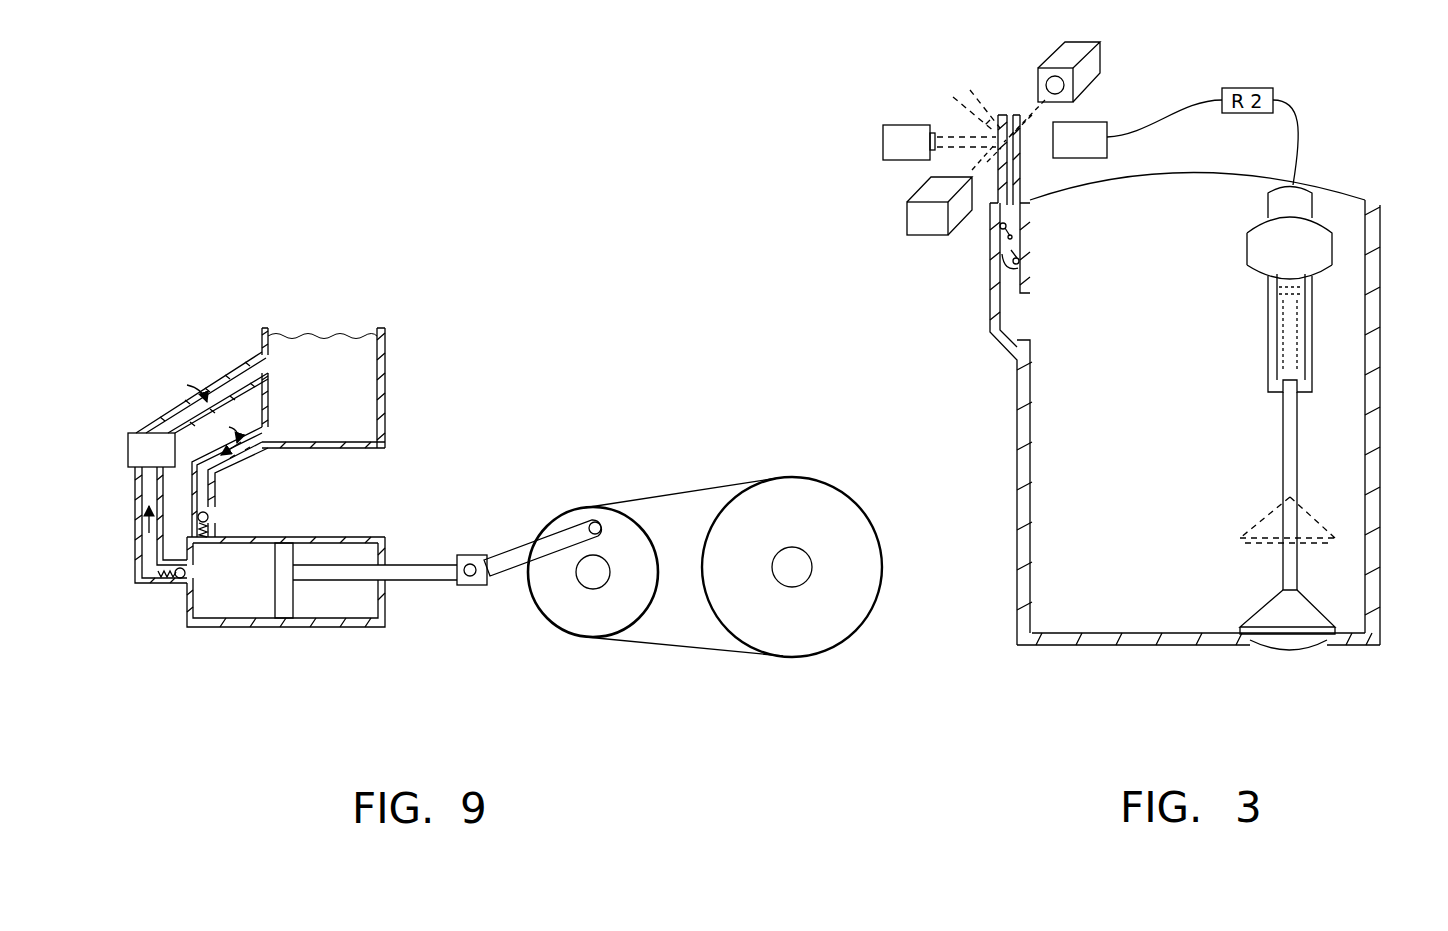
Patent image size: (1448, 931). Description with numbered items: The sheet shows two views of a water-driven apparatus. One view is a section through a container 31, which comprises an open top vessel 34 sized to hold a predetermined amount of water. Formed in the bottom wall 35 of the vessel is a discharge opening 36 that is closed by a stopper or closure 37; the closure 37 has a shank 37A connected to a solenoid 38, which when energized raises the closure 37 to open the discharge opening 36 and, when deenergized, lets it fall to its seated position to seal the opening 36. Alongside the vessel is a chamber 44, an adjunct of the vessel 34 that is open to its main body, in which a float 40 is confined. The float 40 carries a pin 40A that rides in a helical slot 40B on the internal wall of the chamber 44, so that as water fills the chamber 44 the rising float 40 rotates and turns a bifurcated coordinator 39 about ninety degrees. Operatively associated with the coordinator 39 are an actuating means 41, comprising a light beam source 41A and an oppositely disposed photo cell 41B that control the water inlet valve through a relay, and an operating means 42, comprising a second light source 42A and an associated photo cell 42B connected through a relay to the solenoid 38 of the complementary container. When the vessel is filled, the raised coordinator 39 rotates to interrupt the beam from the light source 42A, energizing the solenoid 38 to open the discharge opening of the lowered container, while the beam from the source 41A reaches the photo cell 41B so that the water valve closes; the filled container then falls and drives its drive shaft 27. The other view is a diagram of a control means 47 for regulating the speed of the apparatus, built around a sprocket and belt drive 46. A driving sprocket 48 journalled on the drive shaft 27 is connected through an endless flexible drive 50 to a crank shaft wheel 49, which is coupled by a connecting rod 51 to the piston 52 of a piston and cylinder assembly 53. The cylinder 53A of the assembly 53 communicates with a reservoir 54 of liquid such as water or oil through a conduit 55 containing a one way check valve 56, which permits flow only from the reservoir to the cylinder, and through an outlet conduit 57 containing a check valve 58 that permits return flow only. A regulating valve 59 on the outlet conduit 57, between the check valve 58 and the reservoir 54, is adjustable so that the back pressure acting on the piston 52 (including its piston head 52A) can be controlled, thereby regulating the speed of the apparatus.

In FIG. 9, the drive shaft 27 is at (800, 562).
In FIG. 9, the belt drive 46 is at (690, 476).
In FIG. 9, the control means 47 is at (432, 408).
In FIG. 9, the driving sprocket 48 is at (830, 627).
In FIG. 9, the crank shaft wheel 49 is at (588, 612).
In FIG. 9, the endless flexible drive 50 is at (687, 647).
In FIG. 9, the connecting rod 51 is at (525, 540).
In FIG. 9, the piston 52 is at (425, 560).
In FIG. 9, the piston 52A is at (287, 607).
In FIG. 9, the piston and cylinder assembly 53 is at (301, 548).
In FIG. 9, the cylinder 53A is at (305, 537).
In FIG. 9, the reservoir 54 is at (389, 405).
In FIG. 9, the conduit 55 is at (229, 452).
In FIG. 9, the one way check valve 56 is at (208, 517).
In FIG. 9, the outlet conduit 57 is at (163, 556).
In FIG. 9, the check valve 58 is at (178, 583).
In FIG. 9, the regulating valve 59 is at (133, 432).
In FIG. 3, the container 31 is at (1388, 399).
In FIG. 3, the open top vessel 34 is at (1380, 520).
In FIG. 3, the bottom wall 35 is at (1162, 643).
In FIG. 3, the discharge opening 36 is at (1310, 647).
In FIG. 3, the stopper or closure 37 is at (1310, 604).
In FIG. 3, the shank 37A is at (1297, 472).
In FIG. 3, the solenoid 38 is at (1333, 247).
In FIG. 3, the bifurcated coordinator 39 is at (1019, 160).
In FIG. 3, the float 40 is at (1018, 282).
In FIG. 3, the pin 40A is at (1020, 272).
In FIG. 3, the helical slot 40B is at (1017, 255).
In FIG. 3, the actuating means 41 is at (898, 223).
In FIG. 3, the light beam source 41A is at (925, 238).
In FIG. 3, the photo cell 41B is at (1100, 66).
In FIG. 3, the operating means 42 is at (905, 120).
In FIG. 3, the second light source 42A is at (883, 147).
In FIG. 3, the photo cell 42B is at (1108, 145).
In FIG. 3, the chamber 44 is at (1010, 307).